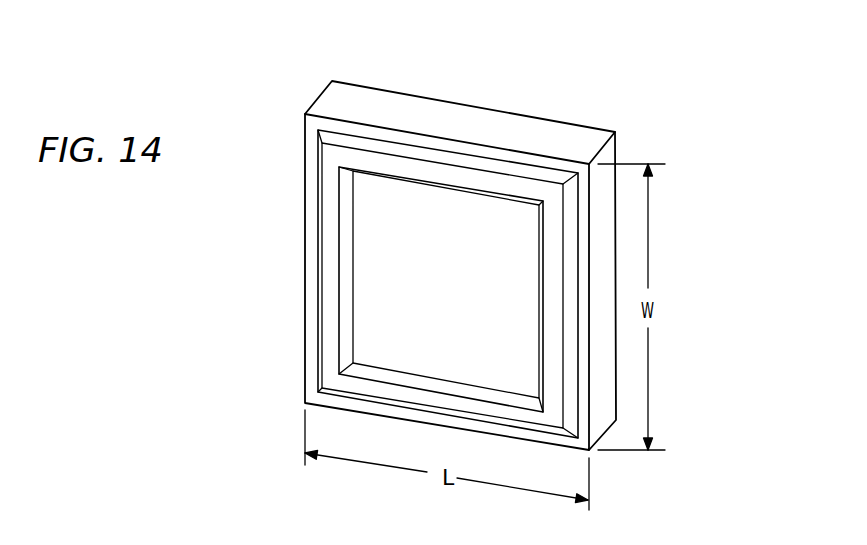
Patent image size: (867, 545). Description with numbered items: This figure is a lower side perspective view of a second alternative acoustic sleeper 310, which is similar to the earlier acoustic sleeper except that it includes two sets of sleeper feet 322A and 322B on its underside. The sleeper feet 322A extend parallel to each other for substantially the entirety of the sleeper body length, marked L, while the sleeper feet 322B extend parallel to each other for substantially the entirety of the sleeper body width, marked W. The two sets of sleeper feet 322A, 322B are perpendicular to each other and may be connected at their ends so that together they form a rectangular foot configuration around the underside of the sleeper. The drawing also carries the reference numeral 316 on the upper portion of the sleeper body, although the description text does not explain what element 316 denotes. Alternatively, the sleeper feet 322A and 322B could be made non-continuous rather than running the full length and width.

The acoustic sleeper 310 is at (460, 240).
The housing 316 is at (393, 115).
The sleeper feet 322A is at (408, 168).
The sleeper feet 322B is at (328, 249).